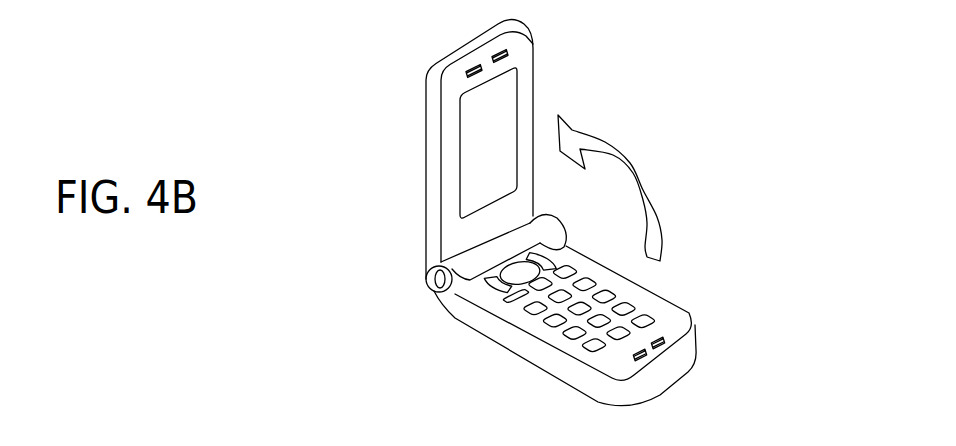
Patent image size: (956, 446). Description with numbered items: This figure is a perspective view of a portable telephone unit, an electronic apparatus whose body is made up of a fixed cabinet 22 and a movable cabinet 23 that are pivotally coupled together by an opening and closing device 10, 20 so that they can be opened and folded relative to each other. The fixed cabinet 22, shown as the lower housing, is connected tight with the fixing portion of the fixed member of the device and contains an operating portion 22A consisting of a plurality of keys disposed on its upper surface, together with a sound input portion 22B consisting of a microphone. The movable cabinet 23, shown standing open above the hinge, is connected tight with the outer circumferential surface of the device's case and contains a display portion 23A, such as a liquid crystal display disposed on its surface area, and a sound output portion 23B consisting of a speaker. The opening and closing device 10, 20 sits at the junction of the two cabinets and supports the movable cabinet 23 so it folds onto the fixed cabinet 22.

The opening and closing device 10 is at (369, 304).
The opening and closing device 20 is at (437, 281).
The fixed cabinet 22 is at (678, 366).
The operating portion 22A is at (652, 317).
The sound input portion 22B is at (667, 342).
The movable cabinet 23 is at (426, 141).
The display portion 23A is at (503, 115).
The sound output portion 23B is at (507, 53).